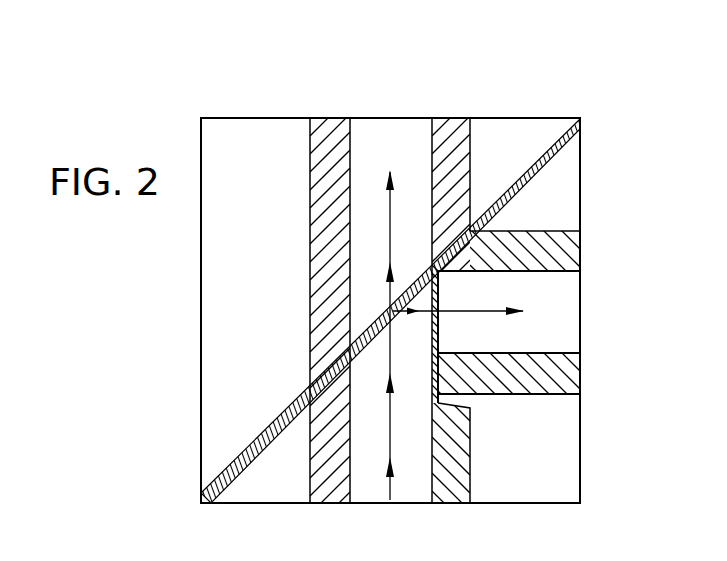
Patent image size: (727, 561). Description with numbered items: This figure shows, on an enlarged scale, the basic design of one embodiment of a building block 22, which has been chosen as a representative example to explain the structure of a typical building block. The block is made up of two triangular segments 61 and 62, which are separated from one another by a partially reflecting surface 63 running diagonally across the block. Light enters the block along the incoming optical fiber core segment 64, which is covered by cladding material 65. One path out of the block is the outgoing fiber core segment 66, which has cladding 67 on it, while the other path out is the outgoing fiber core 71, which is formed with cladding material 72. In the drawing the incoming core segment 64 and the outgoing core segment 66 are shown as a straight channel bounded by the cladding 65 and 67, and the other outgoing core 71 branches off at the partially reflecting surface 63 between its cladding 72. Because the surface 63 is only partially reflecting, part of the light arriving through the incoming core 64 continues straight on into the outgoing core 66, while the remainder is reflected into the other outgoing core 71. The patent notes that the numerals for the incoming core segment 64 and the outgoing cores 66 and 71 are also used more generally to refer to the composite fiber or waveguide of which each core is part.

The building block 22 is at (336, 72).
The triangular segment 61 is at (582, 450).
The triangular segment 62 is at (211, 438).
The partially reflecting surface 63 is at (268, 430).
The incoming optical fiber core segment 64 is at (390, 507).
The cladding material 65 is at (467, 470).
The outgoing fiber core segment 66 is at (392, 118).
The cladding 67 is at (310, 183).
The outgoing fiber core 71 is at (572, 308).
The cladding material 72 is at (544, 231).